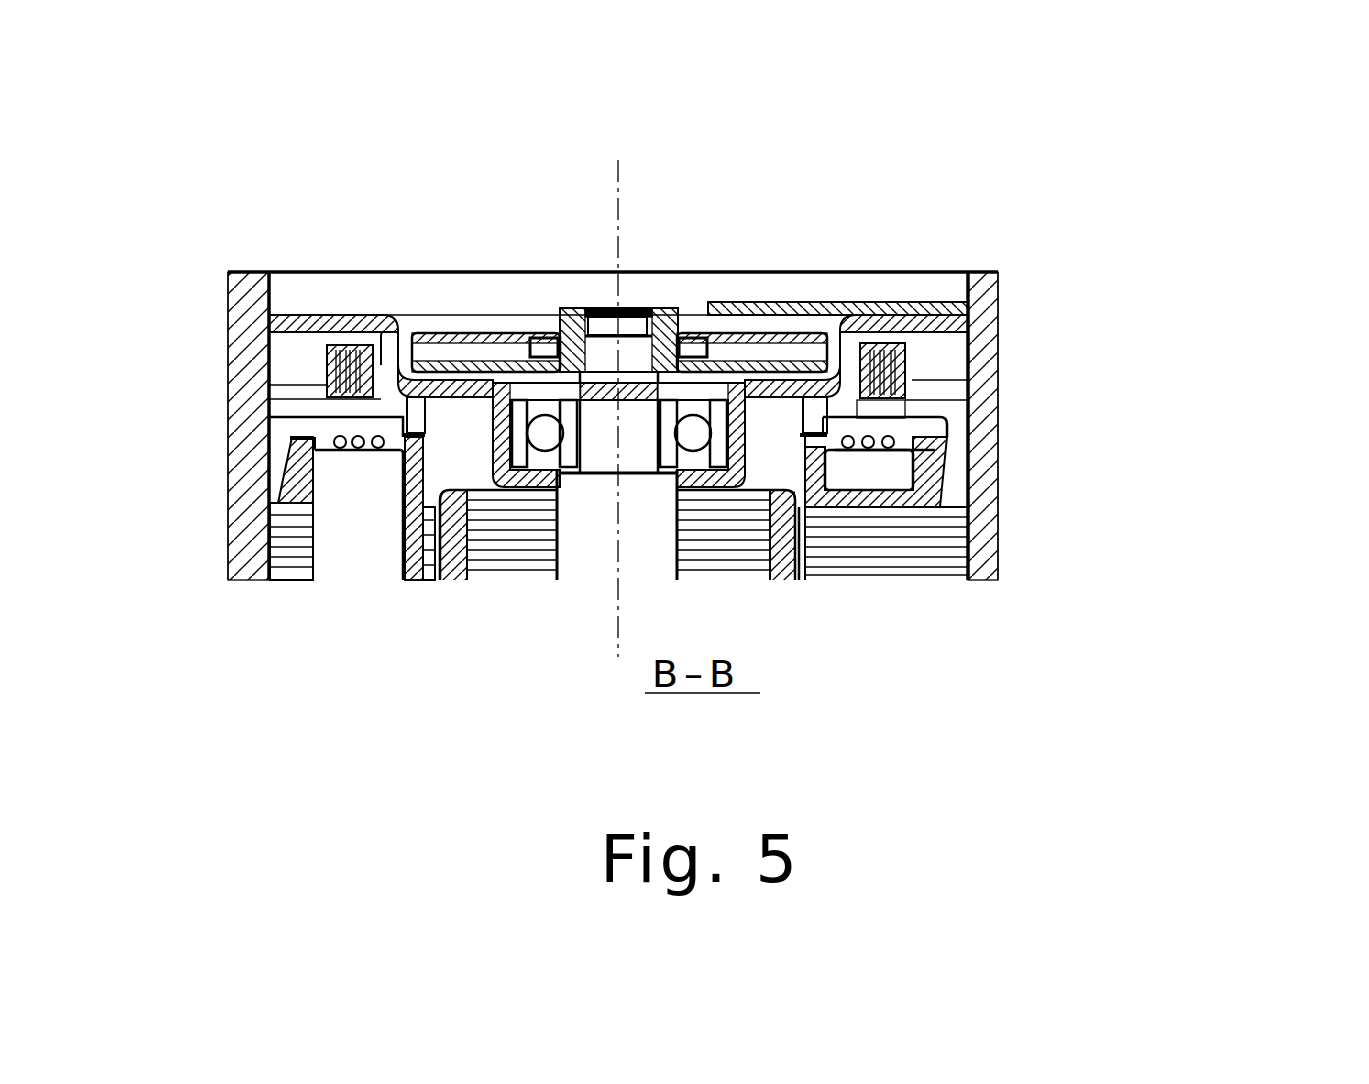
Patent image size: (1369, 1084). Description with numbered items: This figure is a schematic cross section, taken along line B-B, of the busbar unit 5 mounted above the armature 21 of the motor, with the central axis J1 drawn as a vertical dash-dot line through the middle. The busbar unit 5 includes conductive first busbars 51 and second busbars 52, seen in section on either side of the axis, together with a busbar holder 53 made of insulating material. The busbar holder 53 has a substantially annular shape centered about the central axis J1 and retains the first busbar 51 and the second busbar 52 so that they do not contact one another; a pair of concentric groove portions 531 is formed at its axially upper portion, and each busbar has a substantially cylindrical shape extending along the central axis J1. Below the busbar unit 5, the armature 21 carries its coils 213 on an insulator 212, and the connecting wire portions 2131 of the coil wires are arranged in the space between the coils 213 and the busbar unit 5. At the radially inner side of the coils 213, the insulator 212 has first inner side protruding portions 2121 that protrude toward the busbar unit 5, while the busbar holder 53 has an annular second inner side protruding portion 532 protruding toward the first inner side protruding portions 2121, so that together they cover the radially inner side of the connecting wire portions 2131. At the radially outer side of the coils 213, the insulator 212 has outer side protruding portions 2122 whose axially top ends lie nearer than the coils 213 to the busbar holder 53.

The busbar unit 5 is at (606, 297).
The armature 21 is at (1222, 437).
The insulator 212 is at (1186, 481).
The first inner side protruding portions 2121 is at (418, 440).
The outer side protruding portions 2122 is at (880, 466).
The coils 213 is at (295, 480).
The connecting wire portions 2131 is at (340, 437).
The first busbars 51 is at (326, 366).
The second busbars 52 is at (985, 288).
The busbar holder 53 is at (915, 372).
The groove portions 531 is at (880, 347).
The second inner side protruding portion 532 is at (411, 443).
The central axis J1 is at (621, 197).